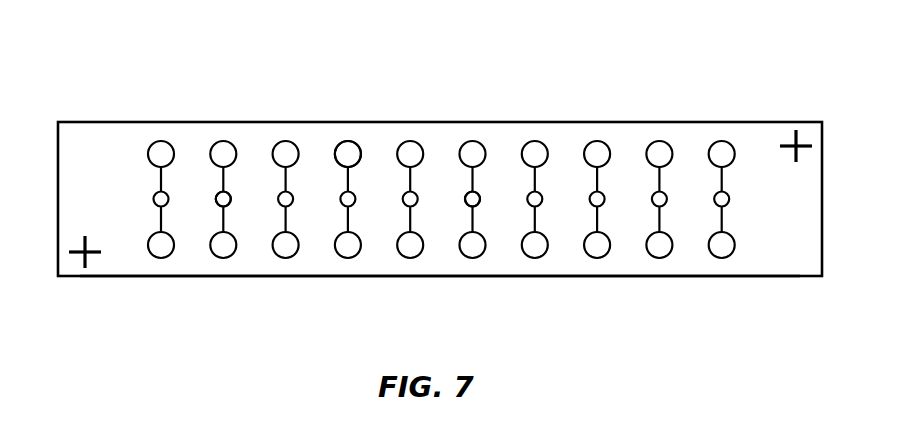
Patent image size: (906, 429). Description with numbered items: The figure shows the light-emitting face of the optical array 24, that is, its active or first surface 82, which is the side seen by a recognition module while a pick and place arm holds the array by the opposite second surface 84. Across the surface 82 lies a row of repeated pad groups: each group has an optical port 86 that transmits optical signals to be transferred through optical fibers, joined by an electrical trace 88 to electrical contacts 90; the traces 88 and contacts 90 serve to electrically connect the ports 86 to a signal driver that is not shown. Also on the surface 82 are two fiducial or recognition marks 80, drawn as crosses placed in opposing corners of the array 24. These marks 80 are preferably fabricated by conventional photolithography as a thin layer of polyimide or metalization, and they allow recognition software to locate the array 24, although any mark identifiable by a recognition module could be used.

The optical array 24 is at (128, 122).
The fiducial marks 80 is at (790, 140).
The active surface 82 is at (677, 277).
The second surface 84 is at (297, 278).
The optical ports 86 is at (479, 194).
The electrical traces 88 is at (229, 194).
The electrical contacts 90 is at (353, 141).